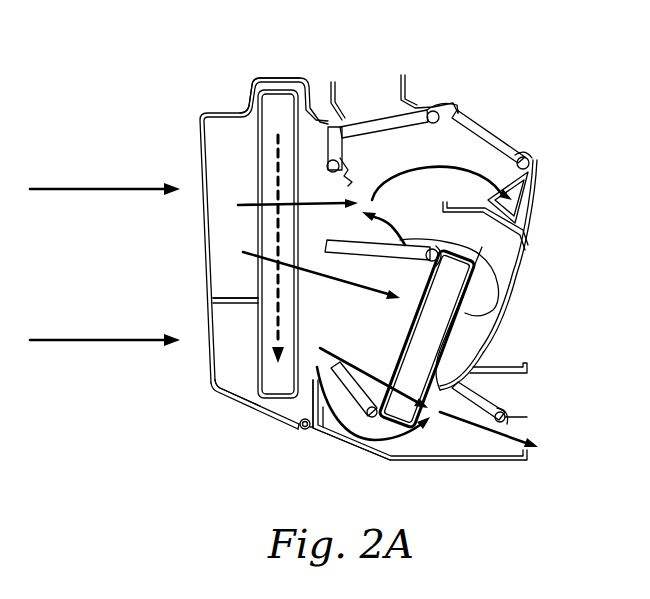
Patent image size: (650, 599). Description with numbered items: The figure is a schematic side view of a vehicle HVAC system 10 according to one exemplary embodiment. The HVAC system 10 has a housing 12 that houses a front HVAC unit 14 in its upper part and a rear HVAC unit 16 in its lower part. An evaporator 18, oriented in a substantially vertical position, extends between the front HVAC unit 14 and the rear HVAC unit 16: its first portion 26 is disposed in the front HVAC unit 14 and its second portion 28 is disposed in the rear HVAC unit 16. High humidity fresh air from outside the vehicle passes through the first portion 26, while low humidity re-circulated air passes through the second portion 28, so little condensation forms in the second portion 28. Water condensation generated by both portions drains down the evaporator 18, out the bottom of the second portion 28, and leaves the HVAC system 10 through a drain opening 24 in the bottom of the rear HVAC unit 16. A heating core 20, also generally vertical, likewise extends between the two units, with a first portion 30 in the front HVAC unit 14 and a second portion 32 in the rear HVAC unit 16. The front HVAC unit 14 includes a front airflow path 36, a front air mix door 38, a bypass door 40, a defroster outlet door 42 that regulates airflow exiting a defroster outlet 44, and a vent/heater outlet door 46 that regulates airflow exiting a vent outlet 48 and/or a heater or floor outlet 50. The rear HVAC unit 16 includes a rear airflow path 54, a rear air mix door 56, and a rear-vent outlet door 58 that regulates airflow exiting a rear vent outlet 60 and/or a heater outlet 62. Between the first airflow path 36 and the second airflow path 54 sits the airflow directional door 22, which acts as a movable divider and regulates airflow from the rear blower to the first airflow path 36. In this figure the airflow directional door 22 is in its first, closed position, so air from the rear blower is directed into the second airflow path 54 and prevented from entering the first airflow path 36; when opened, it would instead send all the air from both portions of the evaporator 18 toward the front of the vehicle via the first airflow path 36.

The HVAC system 10 is at (153, 54).
The housing 12 is at (203, 270).
The front HVAC unit 14 is at (218, 71).
The rear HVAC unit 16 is at (309, 453).
The evaporator 18 is at (260, 247).
The heating core 20 is at (470, 287).
The airflow directional door 22 is at (320, 320).
The drain opening 24 is at (300, 427).
The first portion 26 is at (258, 177).
The second portion 28 is at (257, 380).
The first portion 30 is at (448, 340).
The second portion 32 is at (415, 430).
The front airflow path 36 is at (346, 212).
The front air mix door 38 is at (400, 238).
The bypass door 40 is at (330, 137).
The defroster outlet door 42 is at (383, 112).
The defroster outlet 44 is at (369, 69).
The vent/heater outlet door 46 is at (502, 137).
The vent outlet 48 is at (491, 110).
The heater outlet 50 is at (527, 188).
The rear airflow path 54 is at (305, 366).
The rear air mix door 56 is at (352, 403).
The rear-vent outlet door 58 is at (492, 398).
The rear vent outlet 60 is at (551, 433).
The heater outlet 62 is at (530, 378).